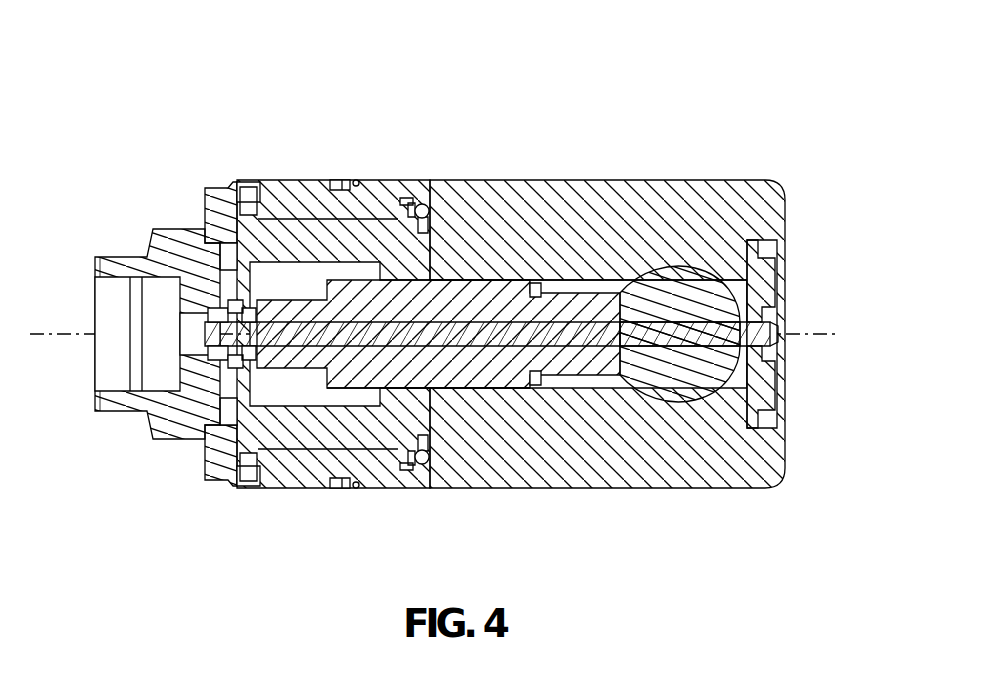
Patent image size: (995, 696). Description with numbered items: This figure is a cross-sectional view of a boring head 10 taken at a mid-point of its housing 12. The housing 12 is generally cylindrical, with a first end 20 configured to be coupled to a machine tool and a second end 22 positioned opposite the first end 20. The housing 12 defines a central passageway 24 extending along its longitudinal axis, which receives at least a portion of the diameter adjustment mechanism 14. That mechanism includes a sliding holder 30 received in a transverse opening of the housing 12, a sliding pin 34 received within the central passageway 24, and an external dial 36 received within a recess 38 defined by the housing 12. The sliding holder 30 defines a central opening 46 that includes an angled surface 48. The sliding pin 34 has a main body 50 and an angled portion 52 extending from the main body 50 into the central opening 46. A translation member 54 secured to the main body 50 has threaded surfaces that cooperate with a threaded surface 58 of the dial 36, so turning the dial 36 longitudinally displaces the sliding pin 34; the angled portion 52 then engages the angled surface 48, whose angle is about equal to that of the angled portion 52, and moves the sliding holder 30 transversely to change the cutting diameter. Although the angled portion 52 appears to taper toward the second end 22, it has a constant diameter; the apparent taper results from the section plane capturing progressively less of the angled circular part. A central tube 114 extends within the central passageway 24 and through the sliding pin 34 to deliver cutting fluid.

The boring head 10 is at (615, 129).
The housing 12 is at (600, 190).
The diameter adjustment mechanism 14 is at (240, 160).
The first end 20 is at (187, 235).
The second end 22 is at (760, 207).
The central passageway 24 is at (590, 287).
The sliding holder 30 is at (683, 273).
The sliding pin 34 is at (443, 293).
The external dial 36 is at (290, 183).
The recess 38 is at (253, 207).
The central opening 46 is at (785, 243).
The angled surface 48 is at (663, 362).
The main body 50 is at (483, 370).
The angled portion 52 is at (603, 362).
The translation member 54 is at (293, 360).
The threaded surface 58 is at (357, 219).
The central tube 114 is at (485, 330).